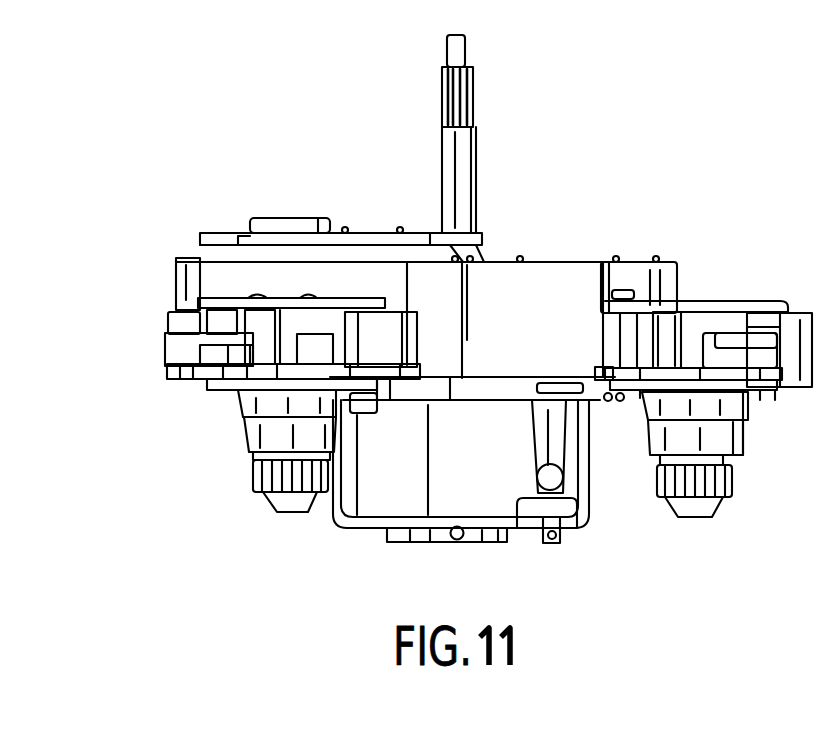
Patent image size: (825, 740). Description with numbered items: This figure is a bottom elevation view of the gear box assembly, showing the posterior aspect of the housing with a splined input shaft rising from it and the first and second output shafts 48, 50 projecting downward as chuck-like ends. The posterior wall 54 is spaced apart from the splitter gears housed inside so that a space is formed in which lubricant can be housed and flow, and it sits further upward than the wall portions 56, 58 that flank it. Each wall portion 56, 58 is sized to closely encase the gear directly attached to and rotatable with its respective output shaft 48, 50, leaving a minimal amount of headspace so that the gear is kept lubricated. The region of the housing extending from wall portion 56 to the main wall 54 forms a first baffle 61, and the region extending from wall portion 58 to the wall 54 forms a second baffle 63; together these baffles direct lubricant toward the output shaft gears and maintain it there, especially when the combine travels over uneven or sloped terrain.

The first output shaft 48 is at (692, 518).
The second output shaft 50 is at (292, 512).
The posterior wall 54 is at (553, 262).
The wall portion 56 is at (230, 298).
The wall portion 58 is at (745, 300).
The first baffle 61 is at (197, 273).
The second baffle 63 is at (662, 287).